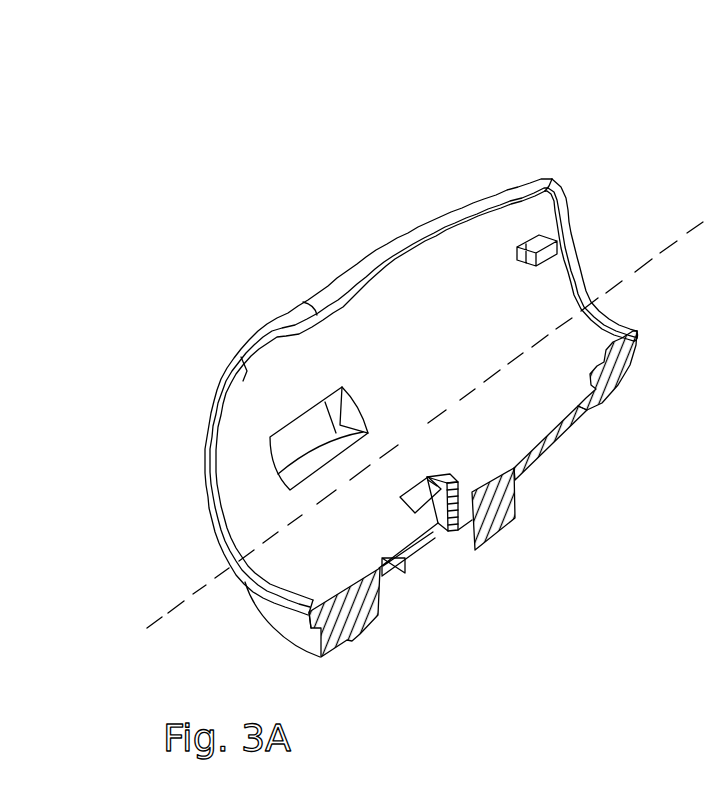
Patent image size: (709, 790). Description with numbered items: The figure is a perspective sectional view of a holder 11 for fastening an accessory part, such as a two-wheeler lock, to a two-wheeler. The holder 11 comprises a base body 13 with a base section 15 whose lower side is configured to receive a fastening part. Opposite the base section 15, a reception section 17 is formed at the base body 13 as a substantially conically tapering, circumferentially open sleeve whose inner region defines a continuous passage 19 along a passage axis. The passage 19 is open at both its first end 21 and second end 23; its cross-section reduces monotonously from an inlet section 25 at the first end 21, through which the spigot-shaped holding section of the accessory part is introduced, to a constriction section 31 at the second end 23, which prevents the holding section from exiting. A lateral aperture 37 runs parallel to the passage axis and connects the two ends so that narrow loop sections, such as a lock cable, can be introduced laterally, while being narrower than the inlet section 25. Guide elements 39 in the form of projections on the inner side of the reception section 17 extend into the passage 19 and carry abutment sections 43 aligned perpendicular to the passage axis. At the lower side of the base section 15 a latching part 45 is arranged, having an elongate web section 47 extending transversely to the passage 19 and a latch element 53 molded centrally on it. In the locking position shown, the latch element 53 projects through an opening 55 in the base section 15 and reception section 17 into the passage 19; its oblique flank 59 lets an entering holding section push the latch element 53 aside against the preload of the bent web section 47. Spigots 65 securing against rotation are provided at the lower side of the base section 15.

The holder 11 is at (224, 186).
The base body 13 is at (182, 573).
The base section 15 is at (288, 634).
The reception section 17 is at (412, 308).
The continuous passage 19 is at (629, 239).
The first end 21 is at (177, 469).
The second end 23 is at (598, 178).
The inlet section 25 is at (215, 345).
The constriction section 31 is at (545, 152).
The lateral aperture 37 is at (458, 215).
The guide elements 39 is at (556, 246).
The abutment sections 43 is at (517, 254).
The latching part 45 is at (398, 578).
The web section 47 is at (400, 566).
The latch element 53 is at (444, 477).
The opening 55 is at (410, 490).
The flank 59 is at (433, 502).
The spigots securing against rotation 65 is at (483, 552).